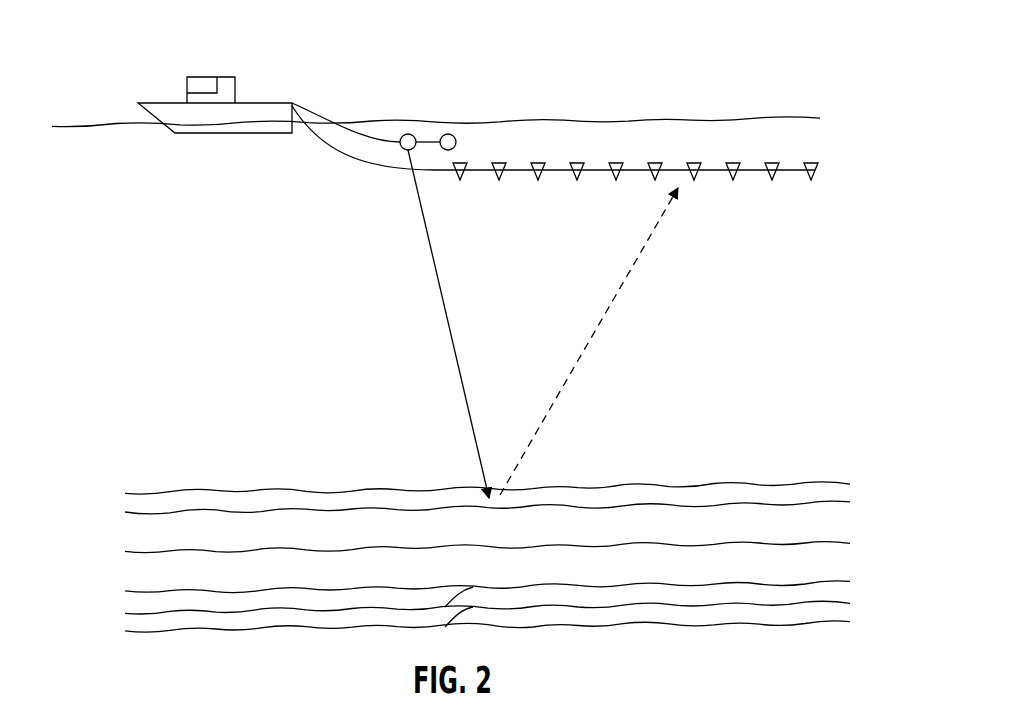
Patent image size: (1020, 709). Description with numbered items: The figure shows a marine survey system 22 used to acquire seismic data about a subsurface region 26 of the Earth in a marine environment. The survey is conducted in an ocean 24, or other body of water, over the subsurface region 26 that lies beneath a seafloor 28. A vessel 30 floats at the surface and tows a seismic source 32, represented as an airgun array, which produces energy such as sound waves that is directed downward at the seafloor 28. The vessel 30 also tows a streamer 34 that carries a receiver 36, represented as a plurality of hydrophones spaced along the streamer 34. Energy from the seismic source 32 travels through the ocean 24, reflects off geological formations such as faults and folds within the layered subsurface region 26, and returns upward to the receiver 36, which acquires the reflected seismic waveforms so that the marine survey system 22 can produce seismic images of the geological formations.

The marine survey system 22 is at (148, 46).
The ocean 24 is at (408, 318).
The subsurface region 26 is at (118, 480).
The seafloor 28 is at (260, 486).
The vessel 30 is at (243, 58).
The seismic source 32 is at (406, 134).
The streamer 34 is at (832, 132).
The receiver 36 is at (499, 162).